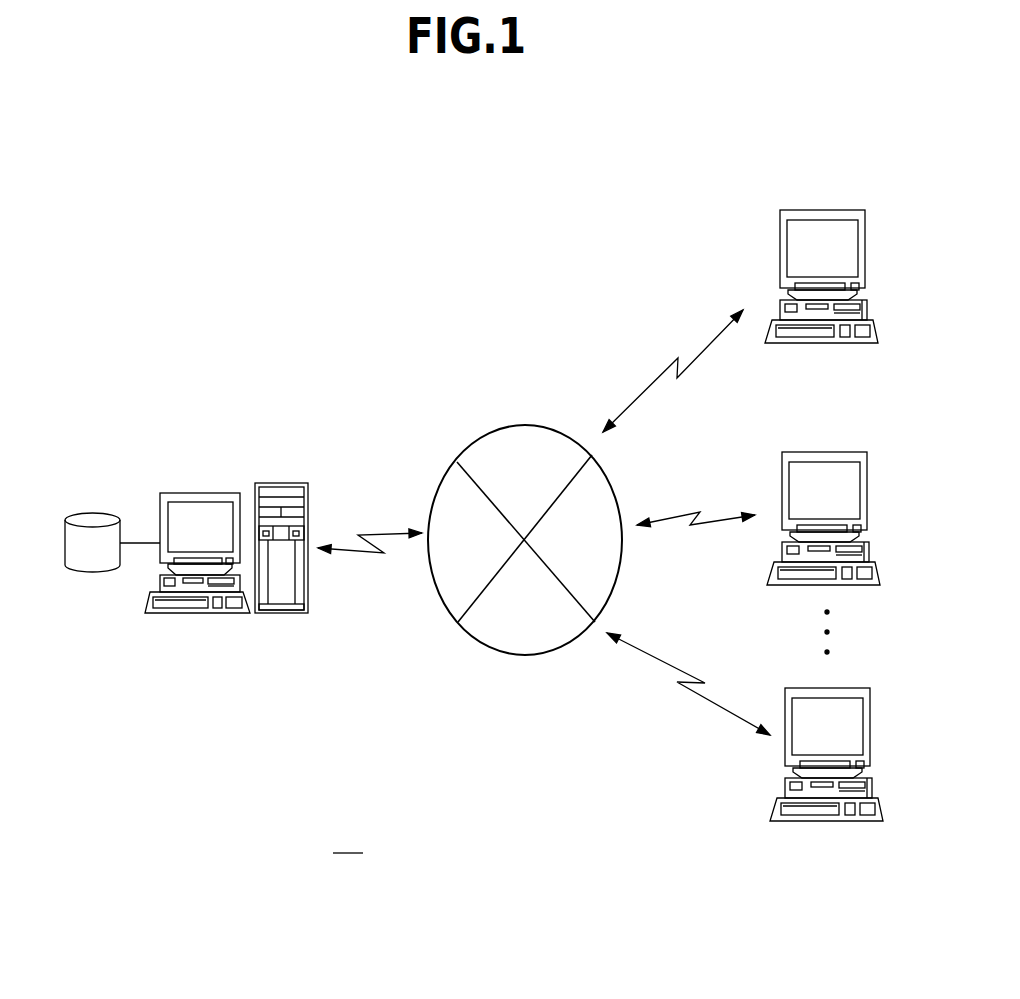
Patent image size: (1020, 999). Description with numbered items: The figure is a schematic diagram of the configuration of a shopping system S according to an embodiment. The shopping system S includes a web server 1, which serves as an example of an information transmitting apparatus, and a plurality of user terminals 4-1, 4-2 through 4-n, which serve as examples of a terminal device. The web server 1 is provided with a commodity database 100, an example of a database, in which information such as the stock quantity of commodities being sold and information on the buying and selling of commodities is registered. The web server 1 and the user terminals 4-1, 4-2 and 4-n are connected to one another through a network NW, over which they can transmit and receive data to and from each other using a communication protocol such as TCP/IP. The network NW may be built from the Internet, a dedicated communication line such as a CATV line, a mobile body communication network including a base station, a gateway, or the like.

The web server 1 is at (203, 493).
The commodity database 100 is at (95, 573).
The network NW is at (518, 425).
The user terminal 4-1 is at (818, 210).
The user terminal 4-2 is at (823, 471).
The user terminal 4-n is at (826, 802).
The shopping system S is at (348, 842).